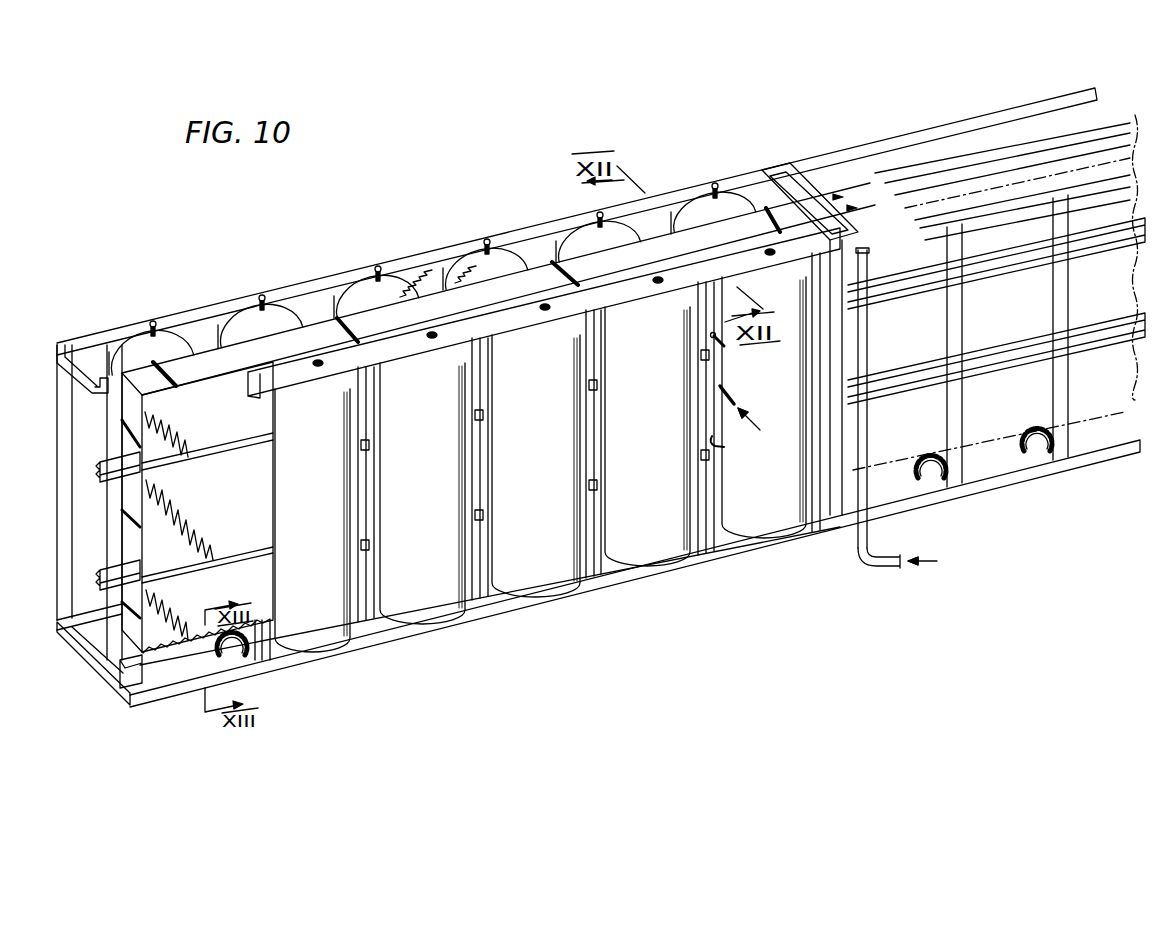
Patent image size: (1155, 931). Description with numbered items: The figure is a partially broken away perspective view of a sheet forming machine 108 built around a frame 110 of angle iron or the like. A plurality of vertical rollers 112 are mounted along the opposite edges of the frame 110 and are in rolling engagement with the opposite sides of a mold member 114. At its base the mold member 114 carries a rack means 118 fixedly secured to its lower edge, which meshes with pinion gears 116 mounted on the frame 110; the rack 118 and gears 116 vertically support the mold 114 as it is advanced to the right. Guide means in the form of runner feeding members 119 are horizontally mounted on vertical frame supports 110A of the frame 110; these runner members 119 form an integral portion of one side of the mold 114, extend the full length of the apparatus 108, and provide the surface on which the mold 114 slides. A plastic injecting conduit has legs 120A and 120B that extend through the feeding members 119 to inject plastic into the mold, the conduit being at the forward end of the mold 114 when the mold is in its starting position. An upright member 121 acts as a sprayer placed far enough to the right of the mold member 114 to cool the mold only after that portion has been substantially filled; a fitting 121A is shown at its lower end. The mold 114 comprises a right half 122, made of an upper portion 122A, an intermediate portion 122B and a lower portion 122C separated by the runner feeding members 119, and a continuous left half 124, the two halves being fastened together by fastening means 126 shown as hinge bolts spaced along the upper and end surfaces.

The sheet forming machine 108 is at (391, 208).
The frame 110 is at (199, 313).
The vertical frame supports 110A is at (487, 597).
The vertical rollers 112 is at (535, 242).
The mold member 114 is at (257, 515).
The pinion gears 116 is at (238, 660).
The rack means 118 is at (158, 650).
The runner feeding members 119 is at (103, 465).
The leg of plastic injecting conduit 120A is at (717, 442).
The leg of plastic injecting conduit 120B is at (717, 341).
The upright member (sprayer) 121 is at (864, 413).
The pipe elbow 121A is at (842, 515).
The right half of mold 122 is at (232, 367).
The upper portion of right half 122A is at (215, 440).
The intermediate portion of right half 122B is at (215, 515).
The lower portion of right half 122C is at (237, 590).
The left half of mold 124 is at (203, 360).
The fastening means 126 is at (333, 318).